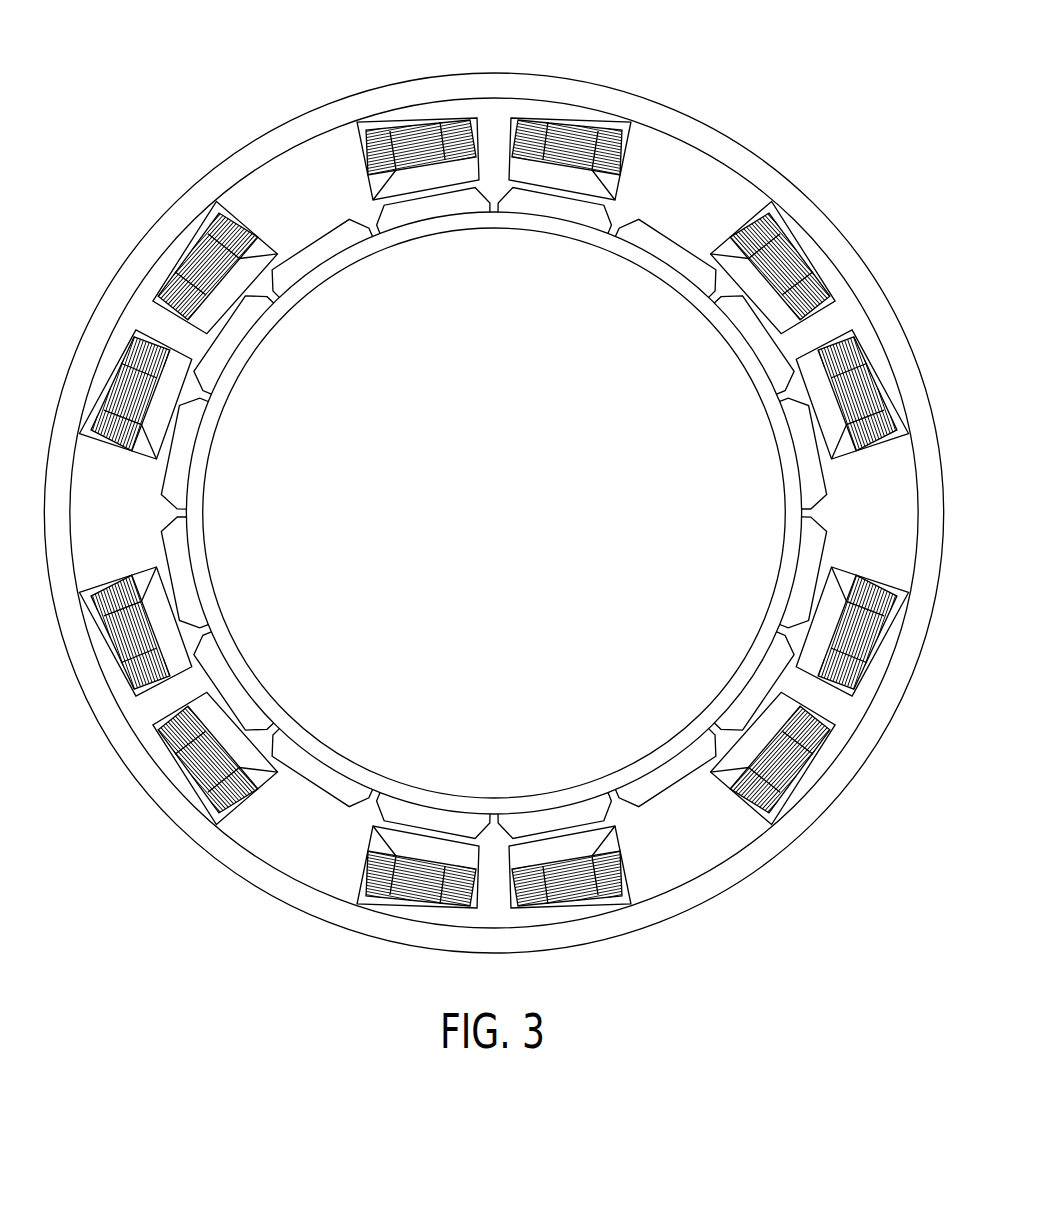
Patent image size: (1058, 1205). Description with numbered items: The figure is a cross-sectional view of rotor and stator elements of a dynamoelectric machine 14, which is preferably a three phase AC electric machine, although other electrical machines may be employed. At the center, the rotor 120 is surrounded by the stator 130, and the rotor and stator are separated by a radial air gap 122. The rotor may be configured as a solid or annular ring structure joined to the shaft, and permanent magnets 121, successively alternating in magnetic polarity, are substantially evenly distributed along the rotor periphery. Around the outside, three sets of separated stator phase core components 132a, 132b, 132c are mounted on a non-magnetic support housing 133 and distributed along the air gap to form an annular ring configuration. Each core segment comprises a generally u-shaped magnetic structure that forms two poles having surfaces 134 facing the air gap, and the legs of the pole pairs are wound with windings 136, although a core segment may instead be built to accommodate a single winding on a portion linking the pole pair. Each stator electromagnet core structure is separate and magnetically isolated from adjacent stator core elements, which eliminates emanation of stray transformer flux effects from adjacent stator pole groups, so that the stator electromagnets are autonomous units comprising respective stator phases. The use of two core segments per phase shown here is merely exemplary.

The dynamoelectric machine 14 is at (153, 117).
The stator 130 is at (772, 143).
The non-magnetic support housing 133 is at (327, 113).
The stator phase core component 132a is at (578, 123).
The stator phase core component 132b is at (802, 247).
The stator phase core component 132c is at (103, 387).
The pole surface 134 is at (183, 382).
The winding 136 is at (118, 445).
The radial air gap 122 is at (597, 200).
The permanent magnet 121 is at (668, 255).
The rotor 120 is at (508, 525).